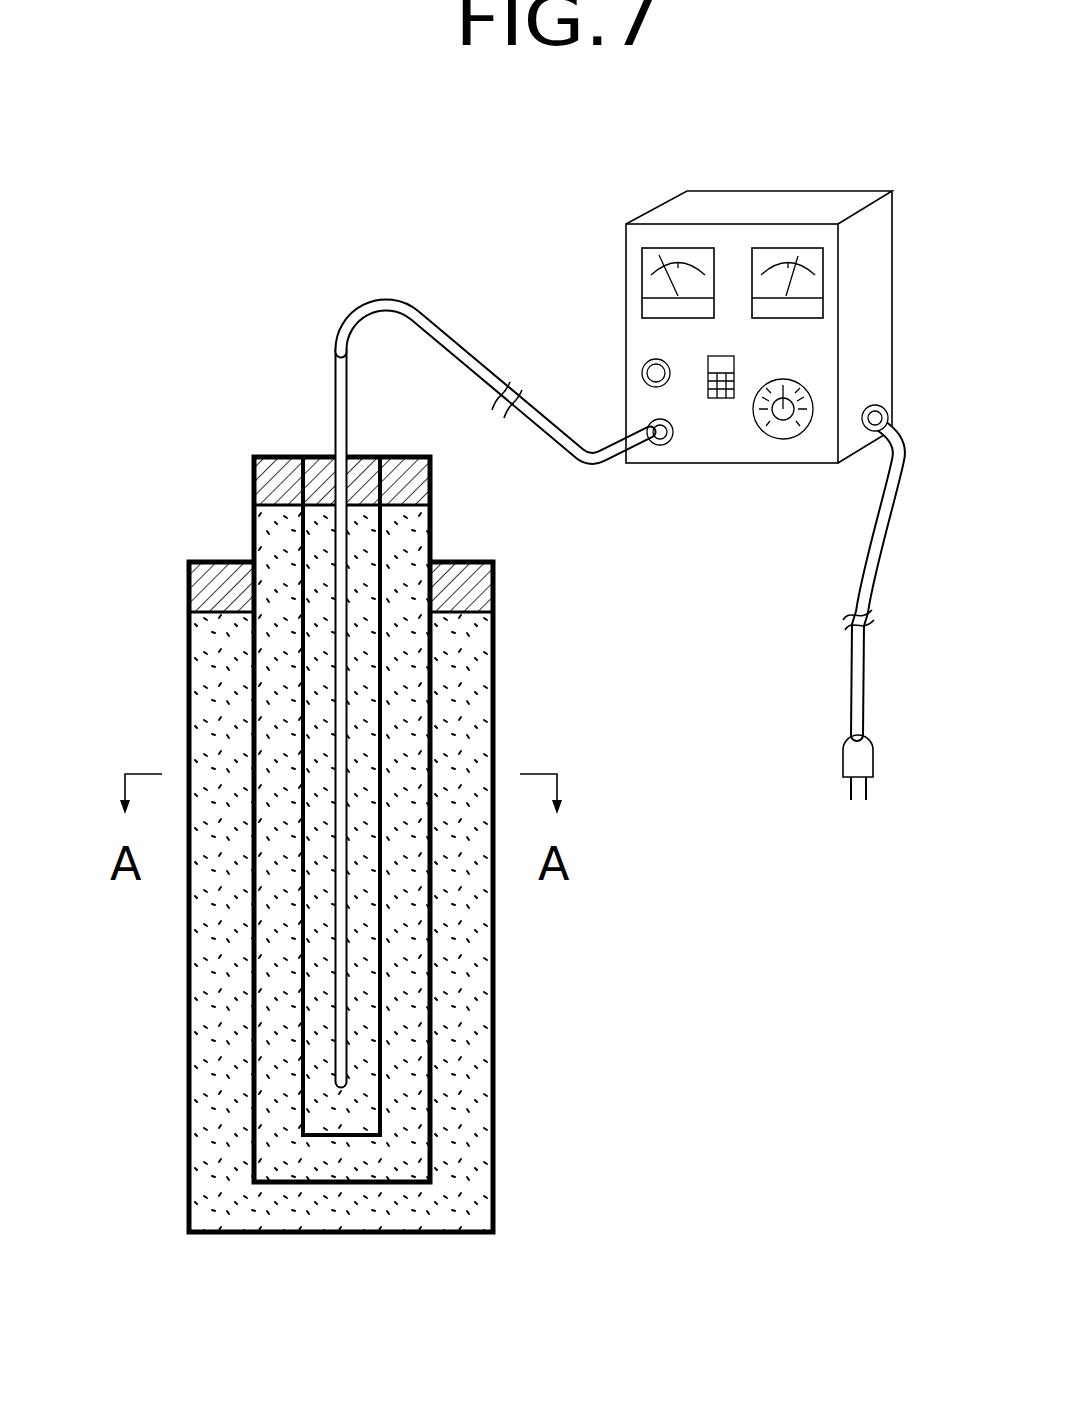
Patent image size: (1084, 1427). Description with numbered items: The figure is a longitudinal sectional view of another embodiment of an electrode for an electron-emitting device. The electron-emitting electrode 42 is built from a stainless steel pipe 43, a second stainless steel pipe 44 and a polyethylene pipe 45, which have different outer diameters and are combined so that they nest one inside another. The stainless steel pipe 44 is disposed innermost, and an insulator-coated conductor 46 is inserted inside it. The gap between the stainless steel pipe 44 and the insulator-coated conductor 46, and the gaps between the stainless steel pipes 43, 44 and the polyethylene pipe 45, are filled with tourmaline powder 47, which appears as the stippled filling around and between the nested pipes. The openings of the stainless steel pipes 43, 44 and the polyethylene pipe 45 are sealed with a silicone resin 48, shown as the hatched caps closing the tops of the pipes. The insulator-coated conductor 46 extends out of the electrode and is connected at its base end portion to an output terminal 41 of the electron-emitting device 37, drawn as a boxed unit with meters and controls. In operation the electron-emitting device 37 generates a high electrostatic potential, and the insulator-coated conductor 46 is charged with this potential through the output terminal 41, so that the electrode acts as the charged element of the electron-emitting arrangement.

The electron-emitting device 37 is at (747, 452).
The output terminal 41 is at (648, 428).
The electron-emitting electrode 42 is at (381, 759).
The stainless steel pipe 43 is at (493, 1036).
The stainless steel pipe 44 is at (392, 1113).
The polyethylene pipe 45 is at (430, 1084).
The insulator-coated conductor 46 is at (349, 913).
The tourmaline powder 47 is at (272, 640).
The silicone resin 48 is at (282, 455).